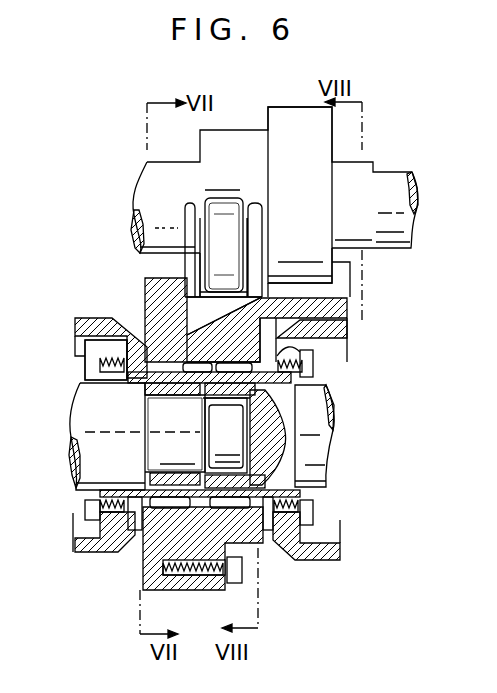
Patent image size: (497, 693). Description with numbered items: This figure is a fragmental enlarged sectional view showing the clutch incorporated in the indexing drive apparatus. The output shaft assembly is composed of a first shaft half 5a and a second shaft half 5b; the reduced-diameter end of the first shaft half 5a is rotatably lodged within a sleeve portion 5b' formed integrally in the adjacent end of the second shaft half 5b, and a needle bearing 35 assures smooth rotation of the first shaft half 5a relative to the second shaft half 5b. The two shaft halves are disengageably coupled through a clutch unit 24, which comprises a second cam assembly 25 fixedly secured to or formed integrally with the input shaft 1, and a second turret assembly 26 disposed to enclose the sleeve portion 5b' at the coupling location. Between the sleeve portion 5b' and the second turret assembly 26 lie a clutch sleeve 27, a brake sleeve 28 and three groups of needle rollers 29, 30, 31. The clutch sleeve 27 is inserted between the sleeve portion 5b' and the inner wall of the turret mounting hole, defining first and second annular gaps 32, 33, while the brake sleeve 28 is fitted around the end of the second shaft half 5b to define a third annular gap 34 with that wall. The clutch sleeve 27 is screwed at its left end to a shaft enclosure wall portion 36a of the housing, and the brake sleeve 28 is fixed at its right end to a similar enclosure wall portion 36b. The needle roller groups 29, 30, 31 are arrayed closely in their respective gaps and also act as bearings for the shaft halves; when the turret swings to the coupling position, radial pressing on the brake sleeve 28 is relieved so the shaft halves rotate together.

The input shaft 1 is at (134, 184).
The second cam assembly 25 is at (287, 110).
The second group of needle rollers 30 is at (169, 376).
The third group of needle rollers 31 is at (235, 368).
The clutch sleeve 27 is at (143, 392).
The third annular gap 34 is at (305, 348).
The shaft enclosure wall portion 36a is at (99, 318).
The second annular gap 33 is at (143, 367).
The first shaft half 5a is at (78, 389).
The sleeve portion 5b' is at (154, 436).
The first group of needle rollers 29 is at (175, 434).
The needle bearing 35 is at (212, 468).
The first annular gap 32 is at (142, 408).
The brake sleeve 28 is at (244, 439).
The second shaft half 5b is at (338, 436).
The clutch unit 24 is at (127, 520).
The second turret assembly 26 is at (247, 540).
The enclosure wall portion 36b is at (328, 548).